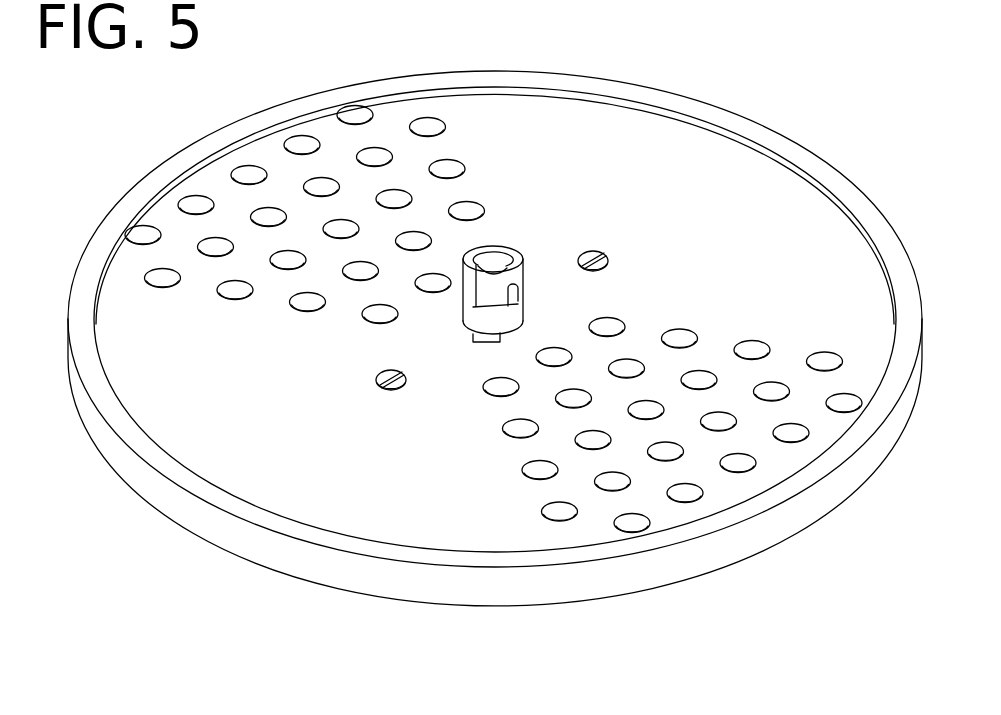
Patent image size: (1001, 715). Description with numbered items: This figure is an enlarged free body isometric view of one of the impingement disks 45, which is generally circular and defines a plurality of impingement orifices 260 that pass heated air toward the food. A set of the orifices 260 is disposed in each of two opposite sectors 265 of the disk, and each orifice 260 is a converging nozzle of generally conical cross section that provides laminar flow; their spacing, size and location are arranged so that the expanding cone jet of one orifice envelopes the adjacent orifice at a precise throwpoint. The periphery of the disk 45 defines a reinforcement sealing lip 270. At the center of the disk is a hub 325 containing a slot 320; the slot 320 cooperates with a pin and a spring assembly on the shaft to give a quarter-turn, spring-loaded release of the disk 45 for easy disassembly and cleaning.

The impingement disk 45 is at (468, 52).
The impingement orifices 260 is at (812, 352).
The opposite sectors 265 is at (481, 161).
The reinforcement sealing lip 270 is at (892, 388).
The slot 320 is at (468, 311).
The hub 325 is at (532, 263).